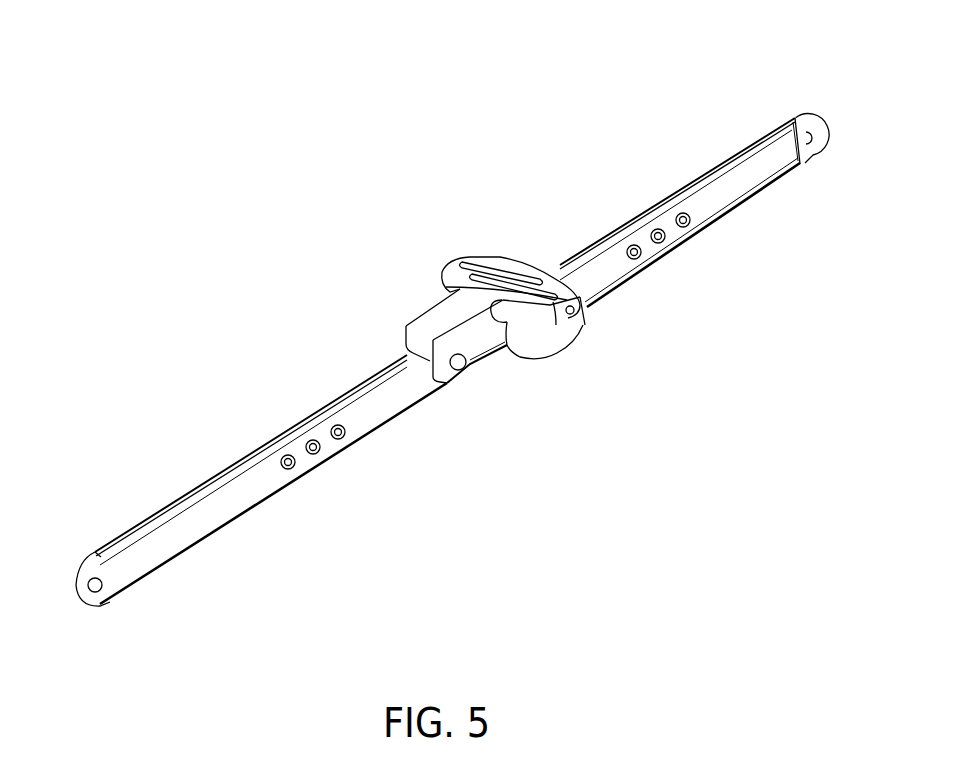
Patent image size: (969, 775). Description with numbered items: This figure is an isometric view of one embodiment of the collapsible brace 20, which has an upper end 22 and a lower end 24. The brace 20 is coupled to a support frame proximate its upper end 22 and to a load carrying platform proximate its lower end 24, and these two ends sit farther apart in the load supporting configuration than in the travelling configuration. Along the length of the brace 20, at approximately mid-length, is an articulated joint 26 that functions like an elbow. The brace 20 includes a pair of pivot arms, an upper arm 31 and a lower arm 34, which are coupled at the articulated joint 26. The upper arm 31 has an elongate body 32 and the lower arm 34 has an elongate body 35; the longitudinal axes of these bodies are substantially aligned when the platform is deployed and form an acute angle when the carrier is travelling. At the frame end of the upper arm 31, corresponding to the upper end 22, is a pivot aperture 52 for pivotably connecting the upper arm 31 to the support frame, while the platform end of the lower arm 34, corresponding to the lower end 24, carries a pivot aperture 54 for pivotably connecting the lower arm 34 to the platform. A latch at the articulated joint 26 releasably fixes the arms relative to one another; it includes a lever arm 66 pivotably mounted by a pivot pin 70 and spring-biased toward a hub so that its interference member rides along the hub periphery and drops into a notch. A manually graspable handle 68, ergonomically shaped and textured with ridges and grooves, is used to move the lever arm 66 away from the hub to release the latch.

The collapsible brace 20 is at (513, 150).
The upper end 22 is at (795, 44).
The lower end 24 is at (88, 638).
The articulated joint 26 is at (585, 407).
The upper arm 31 is at (674, 186).
The elongate body 32 is at (722, 204).
The lower arm 34 is at (182, 486).
The elongate body 35 is at (171, 545).
The pivot aperture 52 is at (812, 142).
The pivot aperture 54 is at (97, 587).
The lever arm 66 is at (423, 325).
The manually graspable handle 68 is at (463, 261).
The pivot pin 70 is at (462, 364).